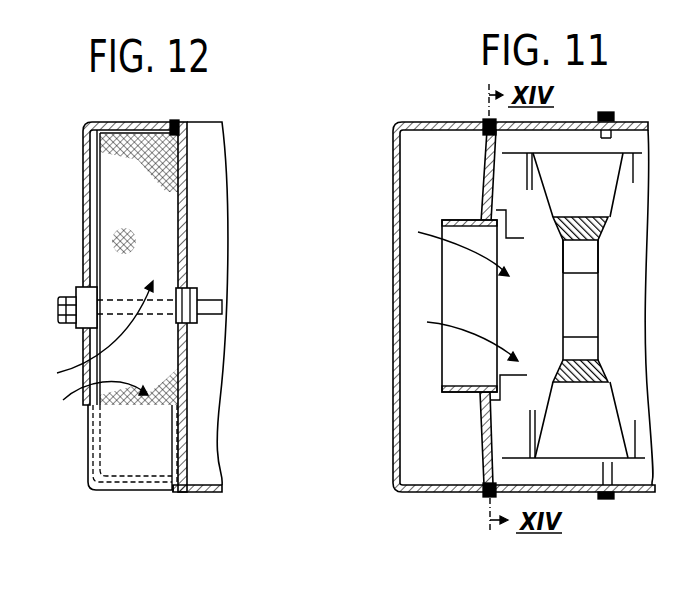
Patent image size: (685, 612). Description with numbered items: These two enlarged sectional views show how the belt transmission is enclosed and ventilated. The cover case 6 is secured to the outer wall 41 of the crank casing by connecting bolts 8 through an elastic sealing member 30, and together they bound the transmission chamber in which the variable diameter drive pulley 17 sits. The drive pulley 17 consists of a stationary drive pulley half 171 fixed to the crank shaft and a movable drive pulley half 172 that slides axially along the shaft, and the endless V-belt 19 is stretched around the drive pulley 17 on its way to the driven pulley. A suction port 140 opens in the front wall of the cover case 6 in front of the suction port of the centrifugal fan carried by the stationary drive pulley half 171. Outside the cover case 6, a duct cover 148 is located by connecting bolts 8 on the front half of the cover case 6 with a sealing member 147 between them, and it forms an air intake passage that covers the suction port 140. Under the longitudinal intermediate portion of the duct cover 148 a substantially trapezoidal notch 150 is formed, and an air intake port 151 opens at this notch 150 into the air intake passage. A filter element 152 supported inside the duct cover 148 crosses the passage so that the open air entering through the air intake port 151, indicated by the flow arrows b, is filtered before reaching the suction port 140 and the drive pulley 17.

In FIG. 12, the duct cover 148 is at (112, 113).
In FIG. 11, the duct cover 148 is at (432, 123).
In FIG. 12, the sealing member 147 is at (173, 120).
In FIG. 11, the sealing member 147 is at (484, 122).
In FIG. 12, the filter element 152 is at (166, 165).
In FIG. 12, the cover case 6 is at (186, 228).
In FIG. 11, the cover case 6 is at (483, 181).
In FIG. 12, the connecting bolt 8 is at (205, 300).
In FIG. 12, the flow direction b is at (68, 372).
In FIG. 11, the flow direction b is at (456, 326).
In FIG. 12, the air intake port 151 is at (140, 451).
In FIG. 12, the notch 150 is at (172, 462).
In FIG. 11, the outer wall 41 is at (637, 122).
In FIG. 11, the suction port 140 is at (477, 392).
In FIG. 11, the variable diameter drive pulley 17 is at (612, 167).
In FIG. 11, the stationary drive pulley half 171 is at (552, 215).
In FIG. 11, the movable drive pulley half 172 is at (610, 216).
In FIG. 11, the endless V-belt 19 is at (582, 377).
In FIG. 11, the elastic sealing member 30 is at (604, 112).